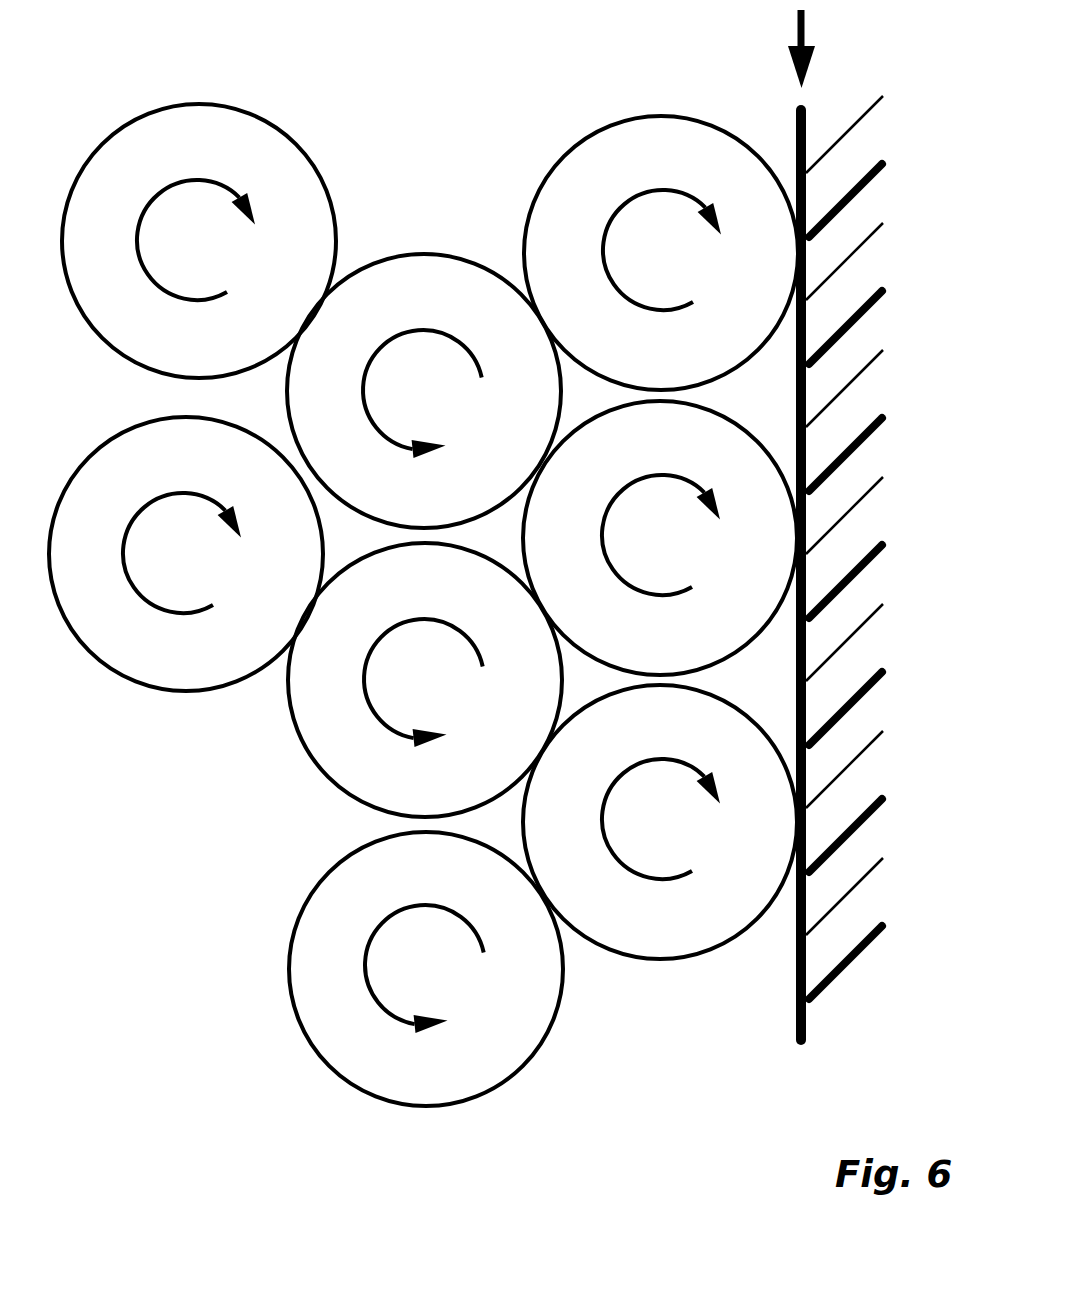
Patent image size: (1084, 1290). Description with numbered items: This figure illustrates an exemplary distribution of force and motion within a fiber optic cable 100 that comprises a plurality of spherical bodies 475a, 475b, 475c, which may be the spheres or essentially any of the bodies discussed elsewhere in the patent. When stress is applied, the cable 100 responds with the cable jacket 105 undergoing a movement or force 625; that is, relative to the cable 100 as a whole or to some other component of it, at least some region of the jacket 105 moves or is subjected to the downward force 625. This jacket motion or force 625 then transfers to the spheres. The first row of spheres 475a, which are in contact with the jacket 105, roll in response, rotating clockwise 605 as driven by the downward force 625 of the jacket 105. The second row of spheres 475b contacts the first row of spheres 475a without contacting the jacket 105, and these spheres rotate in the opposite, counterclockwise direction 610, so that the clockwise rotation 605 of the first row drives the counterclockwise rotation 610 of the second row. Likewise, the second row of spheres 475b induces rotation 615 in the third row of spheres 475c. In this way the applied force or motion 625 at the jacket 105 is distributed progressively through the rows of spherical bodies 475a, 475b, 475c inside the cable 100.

The fiber optic cable 100 is at (412, 48).
The cable jacket 105 is at (903, 469).
The spheres 475a is at (683, 264).
The spheres 475b is at (448, 403).
The spheres 475c is at (223, 253).
The clockwise rotation 605 is at (632, 193).
The counterclockwise rotation 610 is at (393, 335).
The rotation 615 is at (170, 181).
The force or motion 625 is at (810, 50).